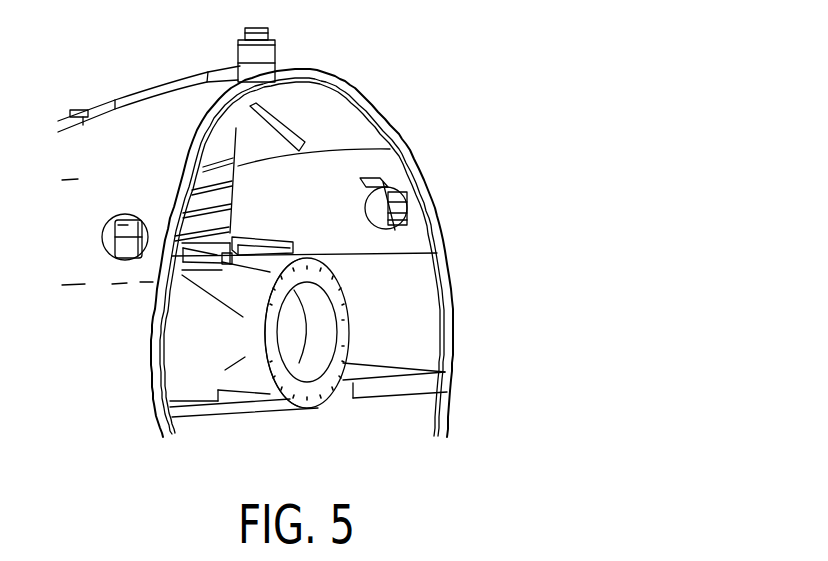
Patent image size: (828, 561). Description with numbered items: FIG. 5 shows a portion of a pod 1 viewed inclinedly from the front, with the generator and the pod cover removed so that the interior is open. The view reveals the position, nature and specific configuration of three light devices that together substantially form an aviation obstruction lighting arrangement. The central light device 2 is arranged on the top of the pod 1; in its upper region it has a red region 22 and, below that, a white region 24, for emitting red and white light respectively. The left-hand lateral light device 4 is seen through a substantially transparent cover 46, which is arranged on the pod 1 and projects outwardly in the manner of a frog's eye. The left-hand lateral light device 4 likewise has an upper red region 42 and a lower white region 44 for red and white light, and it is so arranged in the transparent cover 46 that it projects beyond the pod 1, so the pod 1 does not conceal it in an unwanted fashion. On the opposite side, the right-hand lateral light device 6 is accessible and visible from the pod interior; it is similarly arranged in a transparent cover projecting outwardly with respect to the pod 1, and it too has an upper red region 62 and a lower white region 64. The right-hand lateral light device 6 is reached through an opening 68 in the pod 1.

The pod 1 is at (420, 86).
The central light device 2 is at (198, 67).
The red region 22 is at (263, 32).
The white region 24 is at (272, 58).
The left-hand lateral light device 4 is at (114, 239).
The upper red region 42 is at (128, 214).
The lower white region 44 is at (132, 260).
The transparent cover 46 is at (147, 263).
The right-hand lateral light device 6 is at (426, 213).
The upper red region 62 is at (397, 190).
The lower white region 64 is at (405, 210).
The opening 68 is at (422, 224).